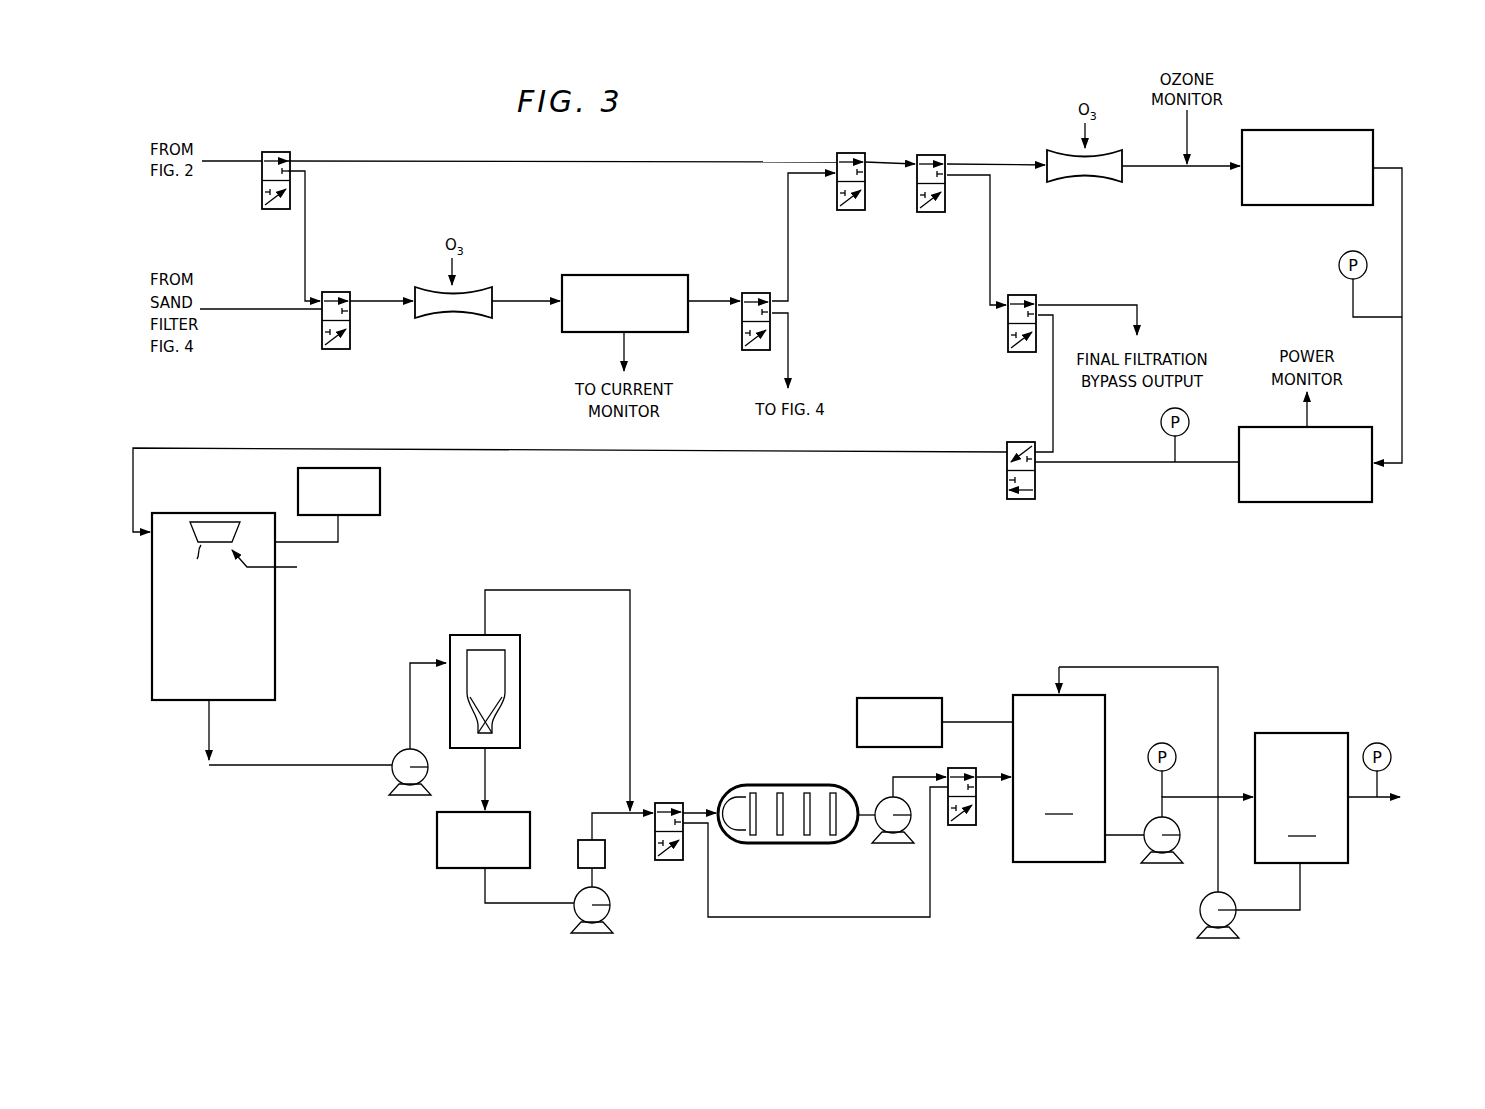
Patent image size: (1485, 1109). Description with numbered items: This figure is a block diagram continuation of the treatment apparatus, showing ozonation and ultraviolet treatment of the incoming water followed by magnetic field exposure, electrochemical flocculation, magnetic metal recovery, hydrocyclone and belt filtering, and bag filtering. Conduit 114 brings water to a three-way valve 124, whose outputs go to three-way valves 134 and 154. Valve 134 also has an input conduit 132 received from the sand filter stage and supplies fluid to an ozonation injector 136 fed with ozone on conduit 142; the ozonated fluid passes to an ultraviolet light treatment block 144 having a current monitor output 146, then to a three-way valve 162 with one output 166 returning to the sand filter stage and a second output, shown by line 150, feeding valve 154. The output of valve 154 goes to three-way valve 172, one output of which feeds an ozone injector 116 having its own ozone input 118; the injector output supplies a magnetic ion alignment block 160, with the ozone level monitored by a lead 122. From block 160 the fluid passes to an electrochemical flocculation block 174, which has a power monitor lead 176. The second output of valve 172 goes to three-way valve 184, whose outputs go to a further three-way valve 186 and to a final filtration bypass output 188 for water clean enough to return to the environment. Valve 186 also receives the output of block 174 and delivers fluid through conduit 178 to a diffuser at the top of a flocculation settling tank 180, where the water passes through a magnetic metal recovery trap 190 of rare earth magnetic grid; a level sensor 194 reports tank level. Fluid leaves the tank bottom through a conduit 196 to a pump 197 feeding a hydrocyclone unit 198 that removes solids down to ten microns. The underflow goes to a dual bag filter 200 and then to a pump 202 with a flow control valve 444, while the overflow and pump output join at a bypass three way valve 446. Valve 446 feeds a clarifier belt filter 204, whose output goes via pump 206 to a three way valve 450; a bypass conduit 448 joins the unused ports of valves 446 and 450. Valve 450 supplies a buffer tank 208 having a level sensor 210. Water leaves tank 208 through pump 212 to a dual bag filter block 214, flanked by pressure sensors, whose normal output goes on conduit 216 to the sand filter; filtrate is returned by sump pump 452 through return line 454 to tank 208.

The conduit 114 is at (226, 160).
The three-way valve 124 is at (273, 152).
The input conduit 132 is at (240, 312).
The three-way valve 134 is at (333, 348).
The ozonation injector 136 is at (440, 318).
The ozone input conduit 142 is at (450, 282).
The ultraviolet light treatment block 144 is at (603, 275).
The current monitor output 146 is at (628, 340).
The line 150 is at (788, 208).
The three-way valve 154 is at (850, 153).
The three-way valve 162 is at (755, 293).
The output conduit 166 is at (790, 355).
The three-way valve 172 is at (933, 155).
The ozone input 118 is at (1082, 147).
The ozone injector 116 is at (1092, 182).
The lead 122 is at (1185, 150).
The magnetic ion alignment block 160 is at (1328, 130).
The three-way valve 184 is at (1022, 295).
The final filtration bypass output 188 is at (1100, 305).
The three-way valve 186 is at (1018, 443).
The power monitor line 176 is at (1303, 412).
The electrochemical flocculation block 174 is at (1239, 480).
The conduit 178 is at (822, 452).
The level sensor 194 is at (383, 490).
The magnetic metal recovery trap 190 is at (327, 573).
The flocculation settling tank 180 is at (277, 660).
The conduit 196 is at (224, 768).
The pump 197 is at (398, 755).
The hydrocyclone unit 198 is at (520, 668).
The dual bag filter 200 is at (437, 845).
The flow control valve 444 is at (583, 840).
The bypass three way valve 446 is at (667, 803).
The pump 202 is at (610, 915).
The clarifier belt filter 204 is at (768, 785).
The pump 206 is at (880, 800).
The level sensor 210 is at (890, 698).
The three way valve 450 is at (963, 828).
The bypass conduit 448 is at (932, 895).
The buffer tank 208 is at (1078, 764).
The pump 212 is at (1148, 822).
The recirculation line 454 is at (1220, 702).
The dual bag filter block 214 is at (1301, 798).
The conduit 216 is at (1368, 803).
The sump pump 452 is at (1200, 915).